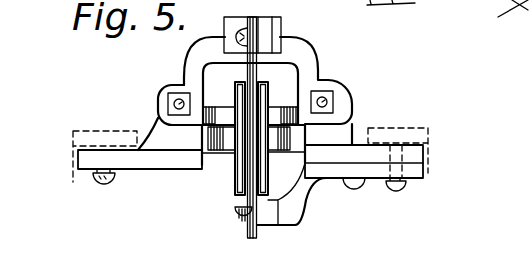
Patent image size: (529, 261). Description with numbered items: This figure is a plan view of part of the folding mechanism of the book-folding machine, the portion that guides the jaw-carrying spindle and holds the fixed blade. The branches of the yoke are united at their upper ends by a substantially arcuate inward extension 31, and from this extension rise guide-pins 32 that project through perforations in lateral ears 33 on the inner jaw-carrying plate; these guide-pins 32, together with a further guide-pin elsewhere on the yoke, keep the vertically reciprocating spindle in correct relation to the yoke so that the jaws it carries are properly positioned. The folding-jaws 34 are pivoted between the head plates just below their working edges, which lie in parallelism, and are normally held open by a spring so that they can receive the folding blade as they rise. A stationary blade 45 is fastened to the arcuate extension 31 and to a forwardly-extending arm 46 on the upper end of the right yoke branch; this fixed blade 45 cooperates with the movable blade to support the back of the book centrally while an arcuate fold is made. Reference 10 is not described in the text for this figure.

The base 10 is at (512, 39).
The arcuate inward extension 31 is at (303, 66).
The guide-pins 32 is at (170, 100).
The lateral ears 33 is at (160, 108).
The folding-jaws 34 is at (264, 89).
The stationary blade 45 is at (248, 205).
The forwardly-extending arm 46 is at (287, 216).